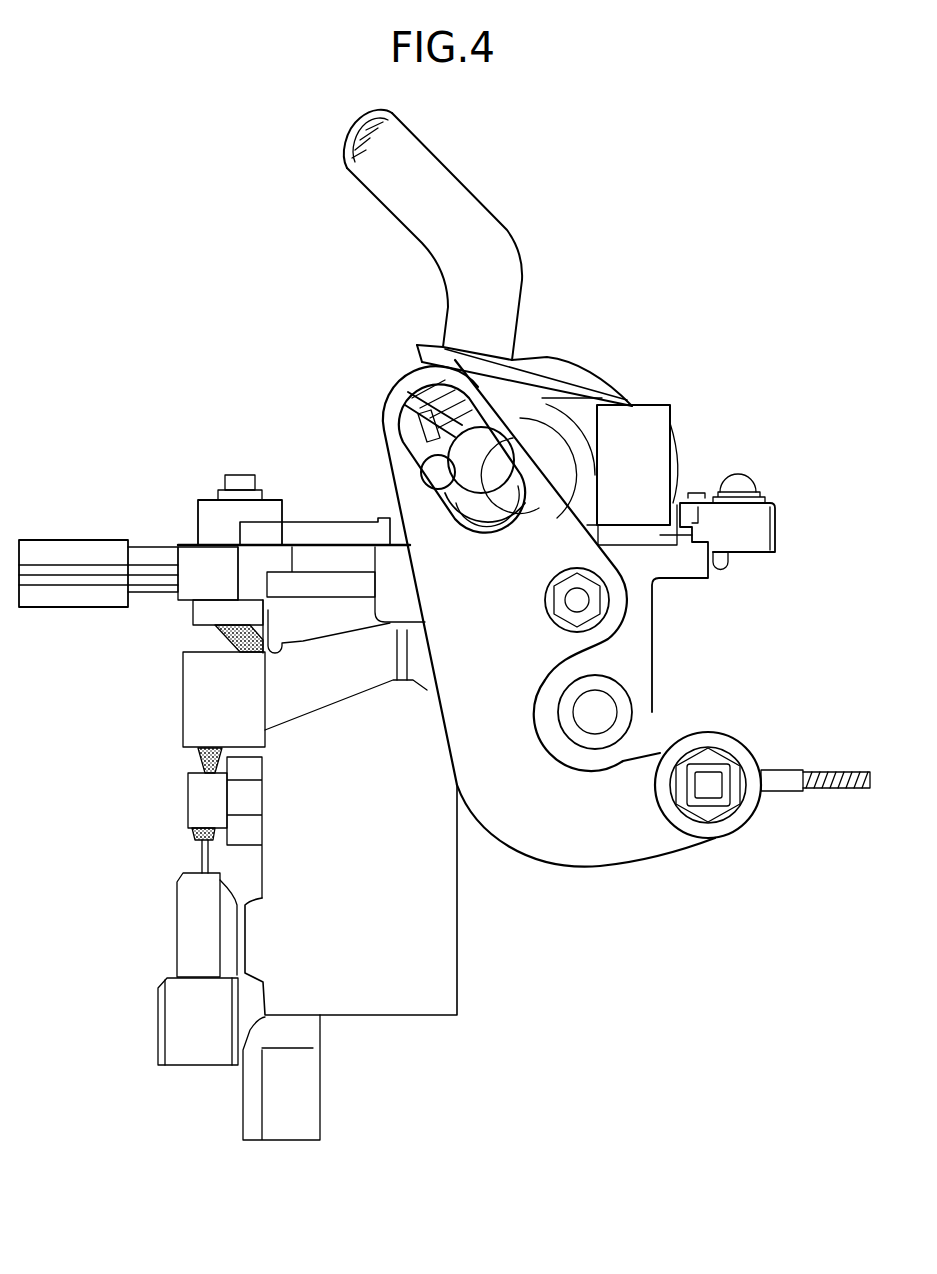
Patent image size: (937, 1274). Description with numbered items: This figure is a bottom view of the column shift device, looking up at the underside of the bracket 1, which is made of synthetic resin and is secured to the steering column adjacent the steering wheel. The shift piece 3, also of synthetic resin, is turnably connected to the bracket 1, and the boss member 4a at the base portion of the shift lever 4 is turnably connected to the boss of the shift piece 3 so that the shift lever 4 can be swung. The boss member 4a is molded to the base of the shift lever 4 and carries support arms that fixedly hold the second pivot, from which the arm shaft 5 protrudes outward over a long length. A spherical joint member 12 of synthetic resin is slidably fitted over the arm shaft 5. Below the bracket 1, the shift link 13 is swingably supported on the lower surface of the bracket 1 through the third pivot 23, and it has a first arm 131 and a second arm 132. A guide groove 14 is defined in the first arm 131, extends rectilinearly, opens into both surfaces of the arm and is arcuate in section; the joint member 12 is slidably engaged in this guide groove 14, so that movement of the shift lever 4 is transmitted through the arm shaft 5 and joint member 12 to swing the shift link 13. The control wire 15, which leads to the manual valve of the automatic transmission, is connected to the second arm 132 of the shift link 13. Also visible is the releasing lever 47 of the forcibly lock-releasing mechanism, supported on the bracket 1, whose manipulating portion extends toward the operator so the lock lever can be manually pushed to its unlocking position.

The bracket 1 is at (642, 662).
The shift piece 3 is at (648, 427).
The shift lever 4 is at (422, 232).
The boss member 4a is at (562, 373).
The arm shaft 5 is at (433, 482).
The joint member 12 is at (397, 407).
The shift link 13 is at (498, 663).
The first arm 131 is at (390, 433).
The second arm 132 is at (580, 848).
The guide groove 14 is at (403, 413).
The control wire 15 is at (851, 783).
The third pivot 23 is at (592, 612).
The releasing lever 47 is at (110, 553).